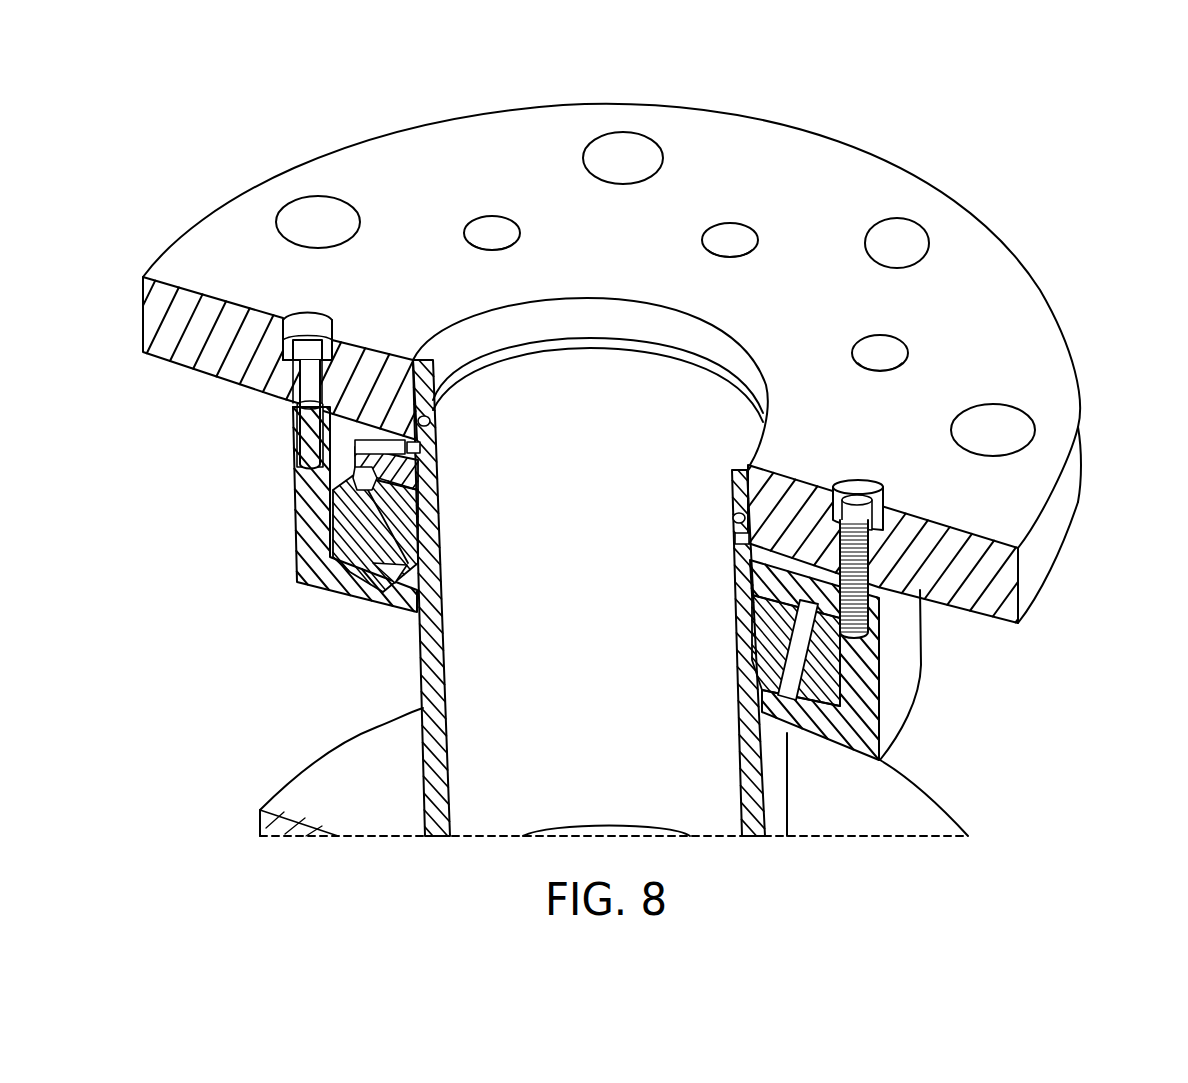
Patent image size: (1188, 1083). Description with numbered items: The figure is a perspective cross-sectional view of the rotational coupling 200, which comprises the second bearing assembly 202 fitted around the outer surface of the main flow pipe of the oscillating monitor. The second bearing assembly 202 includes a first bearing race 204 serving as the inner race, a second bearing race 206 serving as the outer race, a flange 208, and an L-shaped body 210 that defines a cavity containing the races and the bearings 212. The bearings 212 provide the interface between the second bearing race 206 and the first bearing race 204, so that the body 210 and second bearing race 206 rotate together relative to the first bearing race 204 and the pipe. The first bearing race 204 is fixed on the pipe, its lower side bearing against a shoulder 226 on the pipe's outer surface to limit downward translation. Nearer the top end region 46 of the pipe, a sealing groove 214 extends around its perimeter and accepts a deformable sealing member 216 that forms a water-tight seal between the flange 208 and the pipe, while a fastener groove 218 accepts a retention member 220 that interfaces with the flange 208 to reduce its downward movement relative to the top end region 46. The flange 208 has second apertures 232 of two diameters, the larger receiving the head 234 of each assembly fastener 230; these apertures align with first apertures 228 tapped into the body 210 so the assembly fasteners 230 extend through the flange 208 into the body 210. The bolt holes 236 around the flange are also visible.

The rotational coupling 200 is at (1036, 134).
The flange 208 is at (150, 298).
The bolt hole 236 is at (900, 217).
The top end region 46 is at (595, 395).
The fastener groove 218 is at (436, 447).
The shoulder 226 is at (443, 628).
The retention member 220 is at (413, 447).
The sealing groove 214 is at (735, 508).
The sealing member 216 is at (753, 463).
The second apertures 232 is at (297, 323).
The first apertures 228 is at (308, 430).
The body 210 is at (300, 497).
The first bearing race 204 is at (352, 562).
The second bearing race 206 is at (413, 572).
The second bearing assembly 202 is at (856, 708).
The bearings 212 is at (880, 675).
The head 234 is at (870, 484).
The assembly fastener 230 is at (870, 573).